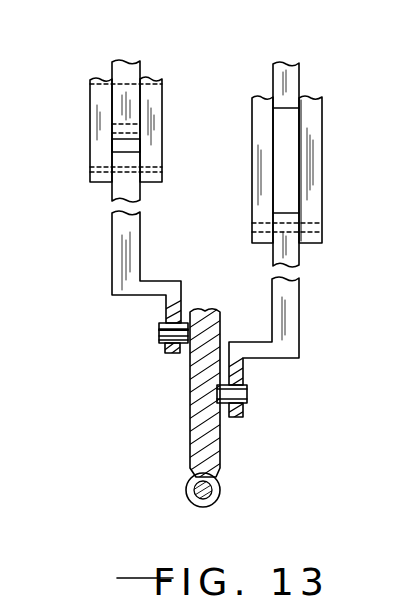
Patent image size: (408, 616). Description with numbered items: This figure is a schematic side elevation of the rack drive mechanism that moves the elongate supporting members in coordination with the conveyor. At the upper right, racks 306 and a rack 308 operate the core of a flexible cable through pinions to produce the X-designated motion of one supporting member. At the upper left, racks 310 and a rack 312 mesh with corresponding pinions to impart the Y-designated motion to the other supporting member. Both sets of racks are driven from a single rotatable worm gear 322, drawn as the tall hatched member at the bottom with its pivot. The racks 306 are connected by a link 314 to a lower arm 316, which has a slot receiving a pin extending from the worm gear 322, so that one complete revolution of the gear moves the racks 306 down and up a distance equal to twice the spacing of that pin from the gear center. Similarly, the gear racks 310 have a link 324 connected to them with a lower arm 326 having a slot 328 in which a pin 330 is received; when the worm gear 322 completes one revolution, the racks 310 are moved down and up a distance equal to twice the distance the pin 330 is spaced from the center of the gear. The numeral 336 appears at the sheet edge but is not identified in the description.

The racks 306 is at (252, 175).
The rack 308 is at (299, 90).
The racks 310 is at (90, 118).
The rack 312 is at (141, 67).
The link 314 is at (299, 298).
The lower arm 316 is at (236, 417).
The worm gear 322 is at (190, 438).
The link 324 is at (112, 238).
The lower arm 326 is at (172, 353).
The slot 328 is at (159, 336).
The pin 330 is at (160, 326).
The element (cut off) 336 is at (16, 522).